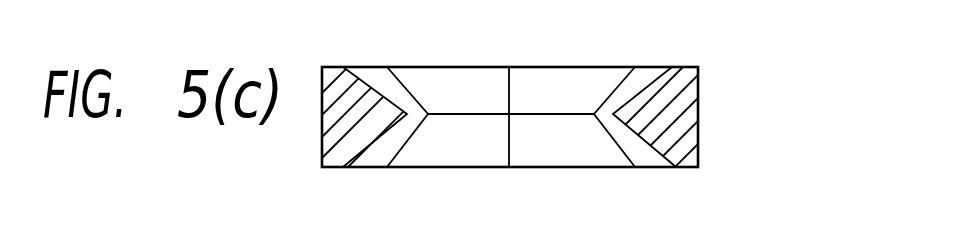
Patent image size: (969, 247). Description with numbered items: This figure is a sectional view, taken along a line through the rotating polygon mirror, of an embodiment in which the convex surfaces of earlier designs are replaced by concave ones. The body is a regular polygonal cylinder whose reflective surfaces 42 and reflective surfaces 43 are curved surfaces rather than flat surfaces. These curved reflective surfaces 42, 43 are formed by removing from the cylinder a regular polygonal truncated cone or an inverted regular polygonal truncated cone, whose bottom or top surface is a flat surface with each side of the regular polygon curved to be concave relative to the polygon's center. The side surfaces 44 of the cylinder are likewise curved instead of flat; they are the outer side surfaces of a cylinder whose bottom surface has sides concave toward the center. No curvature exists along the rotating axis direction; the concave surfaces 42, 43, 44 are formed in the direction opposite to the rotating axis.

The reflective surfaces 42 is at (636, 148).
The reflective surfaces 43 is at (645, 88).
The side surfaces 44 is at (698, 103).